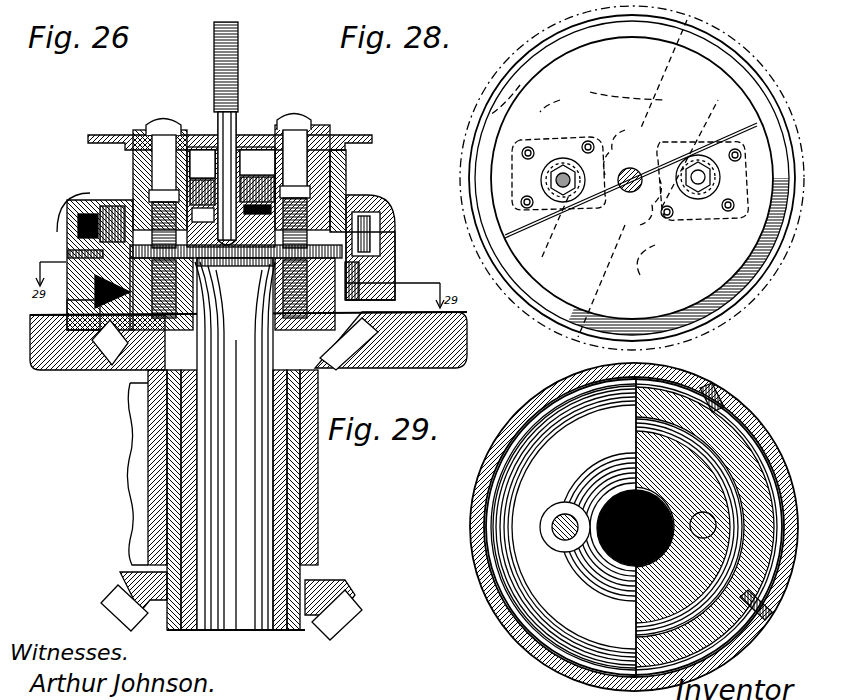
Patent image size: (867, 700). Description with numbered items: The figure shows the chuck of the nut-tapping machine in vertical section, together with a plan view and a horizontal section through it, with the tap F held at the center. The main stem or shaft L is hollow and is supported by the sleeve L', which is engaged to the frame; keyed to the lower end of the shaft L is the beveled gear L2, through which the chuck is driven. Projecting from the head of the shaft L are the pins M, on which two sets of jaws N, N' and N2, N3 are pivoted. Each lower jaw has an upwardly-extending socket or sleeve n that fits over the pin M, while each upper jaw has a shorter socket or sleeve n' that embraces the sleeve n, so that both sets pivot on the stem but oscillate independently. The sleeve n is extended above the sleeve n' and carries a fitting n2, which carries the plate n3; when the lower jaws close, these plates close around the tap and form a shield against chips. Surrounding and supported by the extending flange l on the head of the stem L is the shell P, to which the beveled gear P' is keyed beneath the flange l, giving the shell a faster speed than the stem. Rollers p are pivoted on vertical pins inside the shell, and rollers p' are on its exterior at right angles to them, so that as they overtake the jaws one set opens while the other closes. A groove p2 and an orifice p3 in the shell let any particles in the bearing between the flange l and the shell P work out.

In FIG. 26, the threaded rod F is at (238, 60).
In FIG. 26, the socket or sleeve n is at (274, 161).
In FIG. 26, the socket or sleeve n' is at (194, 141).
In FIG. 26, the fitting n2 is at (183, 140).
In FIG. 28, the fitting n2 is at (552, 145).
In FIG. 26, the plate n3 is at (95, 135).
In FIG. 28, the plate n3 is at (577, 182).
In FIG. 26, the jaw N is at (141, 175).
In FIG. 26, the jaw N' is at (348, 191).
In FIG. 26, the jaw N2 is at (118, 200).
In FIG. 26, the jaw N3 is at (380, 200).
In FIG. 26, the shell P is at (382, 257).
In FIG. 29, the shell P is at (637, 527).
In FIG. 26, the beveled gear P' is at (248, 358).
In FIG. 26, the roller p is at (230, 241).
In FIG. 29, the roller p' is at (762, 501).
In FIG. 26, the groove p2 is at (345, 270).
In FIG. 26, the orifice p3 is at (68, 252).
In FIG. 26, the main stem or shaft L is at (233, 444).
In FIG. 29, the main stem or shaft L is at (604, 513).
In FIG. 26, the sleeve L' is at (117, 474).
In FIG. 26, the beveled gear L2 is at (125, 588).
In FIG. 26, the pin M is at (262, 265).
In FIG. 28, the pin M is at (670, 178).
In FIG. 29, the pin M is at (572, 540).
In FIG. 26, the flange l is at (60, 290).